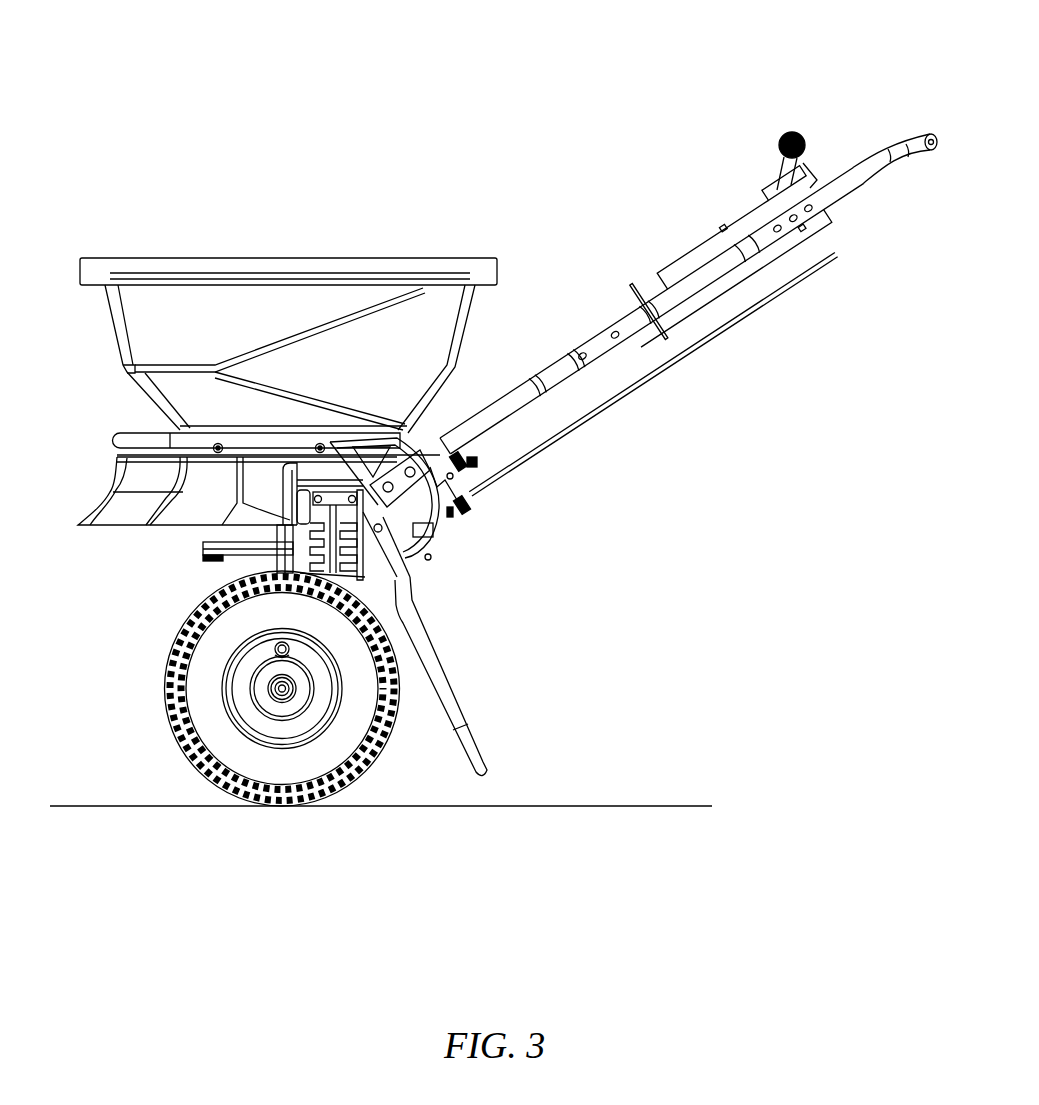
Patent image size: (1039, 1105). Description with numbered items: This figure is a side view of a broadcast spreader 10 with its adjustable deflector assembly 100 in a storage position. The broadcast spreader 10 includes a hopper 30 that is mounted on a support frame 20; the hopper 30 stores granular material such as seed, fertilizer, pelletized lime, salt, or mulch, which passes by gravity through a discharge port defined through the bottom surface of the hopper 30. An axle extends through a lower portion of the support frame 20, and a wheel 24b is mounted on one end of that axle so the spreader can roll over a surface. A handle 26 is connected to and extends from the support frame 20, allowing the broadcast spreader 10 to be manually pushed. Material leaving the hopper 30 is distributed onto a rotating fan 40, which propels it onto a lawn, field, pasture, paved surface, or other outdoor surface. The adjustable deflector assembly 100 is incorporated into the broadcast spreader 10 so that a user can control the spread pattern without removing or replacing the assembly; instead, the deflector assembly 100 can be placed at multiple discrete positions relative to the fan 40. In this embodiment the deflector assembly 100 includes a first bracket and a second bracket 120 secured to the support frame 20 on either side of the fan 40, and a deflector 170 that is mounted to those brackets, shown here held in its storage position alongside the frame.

The broadcast spreader 10 is at (233, 81).
The adjustable deflector assembly 100 is at (88, 462).
The hopper 30 is at (345, 254).
The support frame 20 is at (132, 438).
The deflector 170 is at (103, 513).
The rotating fan 40 is at (203, 552).
The second bracket 120 is at (368, 512).
The wheel 24b is at (268, 808).
The handle 26 is at (845, 175).